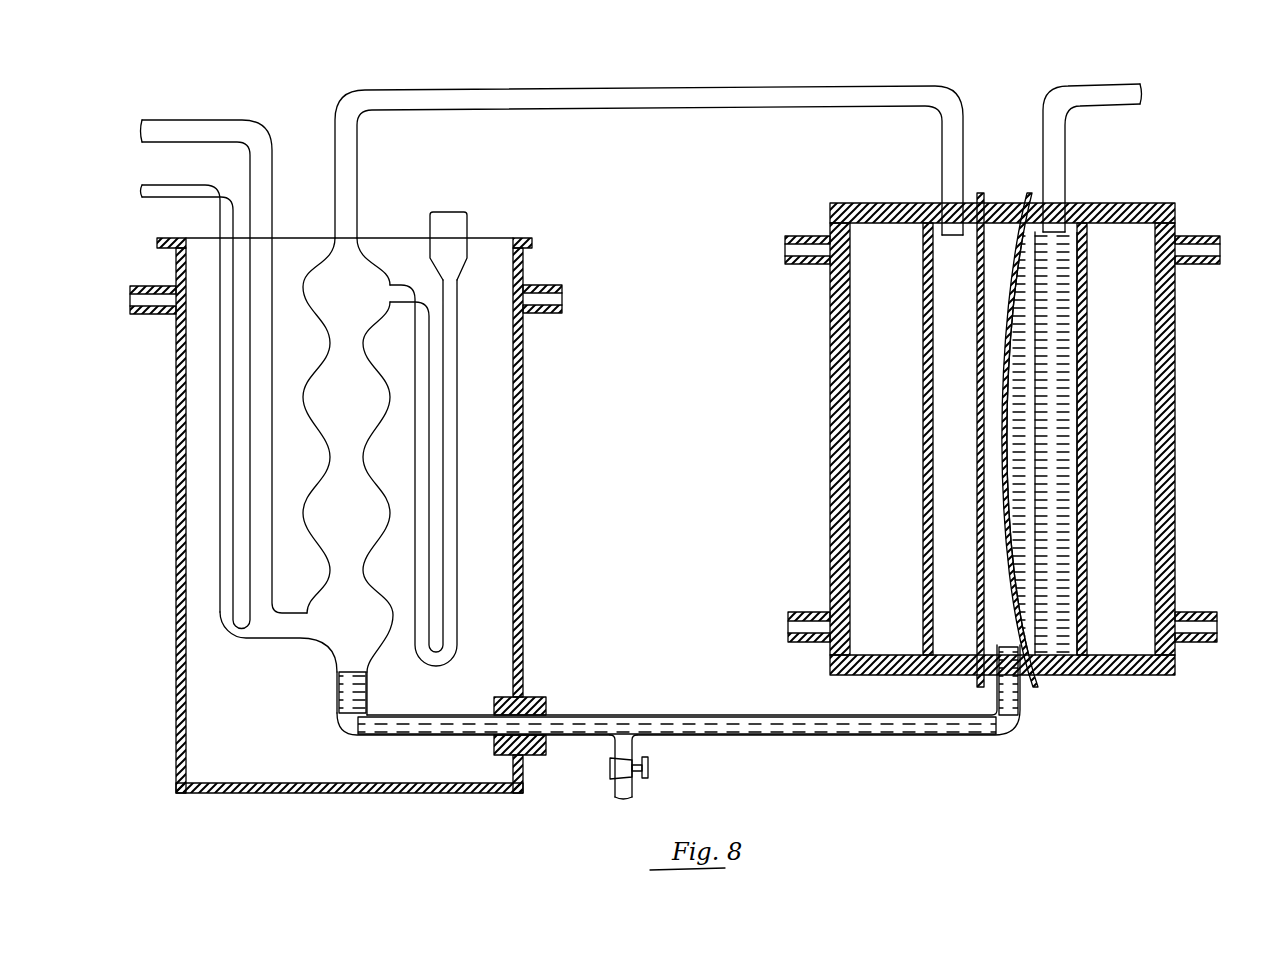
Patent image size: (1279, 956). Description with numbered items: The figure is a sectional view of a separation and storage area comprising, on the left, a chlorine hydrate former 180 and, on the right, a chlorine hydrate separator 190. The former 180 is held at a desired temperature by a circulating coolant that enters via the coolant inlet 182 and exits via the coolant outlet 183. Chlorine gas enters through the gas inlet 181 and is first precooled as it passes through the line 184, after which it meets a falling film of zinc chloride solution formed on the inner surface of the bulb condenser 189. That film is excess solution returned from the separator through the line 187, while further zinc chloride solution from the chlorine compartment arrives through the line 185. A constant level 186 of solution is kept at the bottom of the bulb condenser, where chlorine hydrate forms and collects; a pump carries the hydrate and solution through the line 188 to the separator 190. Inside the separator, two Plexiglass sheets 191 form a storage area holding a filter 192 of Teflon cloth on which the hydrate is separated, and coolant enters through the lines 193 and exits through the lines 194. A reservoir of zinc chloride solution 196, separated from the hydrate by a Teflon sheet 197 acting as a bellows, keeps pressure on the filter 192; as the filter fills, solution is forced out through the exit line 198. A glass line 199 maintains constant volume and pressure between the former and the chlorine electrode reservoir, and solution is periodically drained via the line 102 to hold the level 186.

The line 102 is at (612, 782).
The chlorine hydrate former 180 is at (183, 495).
The gas inlet 181 is at (455, 212).
The coolant inlet 182 is at (155, 316).
The coolant outlet 183 is at (536, 313).
The line 184 is at (463, 432).
The line 185 is at (172, 197).
The level 186 is at (345, 672).
The line 187 is at (408, 112).
The line 188 is at (583, 715).
The bulb condenser 189 is at (331, 470).
The chlorine hydrate separator 190 is at (1180, 395).
The Plexiglass sheets 191 is at (921, 430).
The filter 192 is at (975, 385).
The coolant inlet lines 193 is at (812, 612).
The coolant outlet lines 194 is at (822, 236).
The zinc chloride solution reservoir 196 is at (1060, 370).
The Teflon sheet 197 is at (1000, 450).
The exit line 198 is at (1068, 155).
The glass line 199 is at (188, 120).